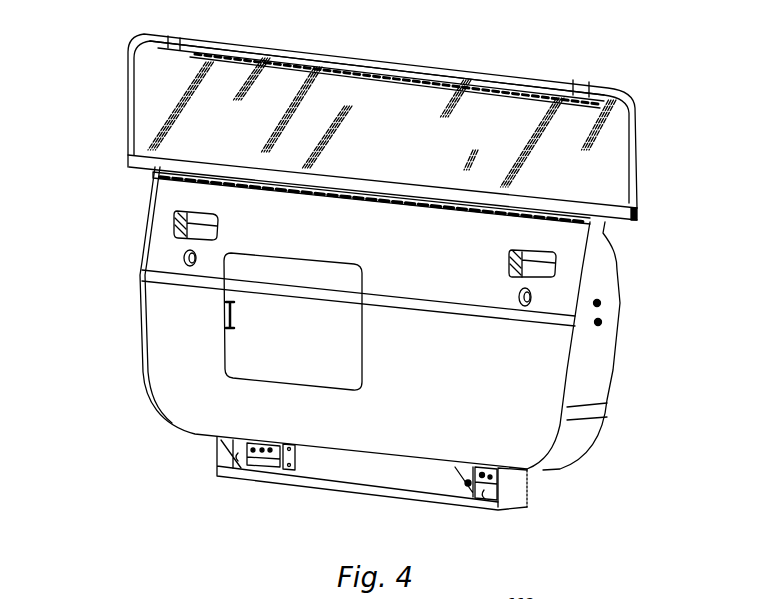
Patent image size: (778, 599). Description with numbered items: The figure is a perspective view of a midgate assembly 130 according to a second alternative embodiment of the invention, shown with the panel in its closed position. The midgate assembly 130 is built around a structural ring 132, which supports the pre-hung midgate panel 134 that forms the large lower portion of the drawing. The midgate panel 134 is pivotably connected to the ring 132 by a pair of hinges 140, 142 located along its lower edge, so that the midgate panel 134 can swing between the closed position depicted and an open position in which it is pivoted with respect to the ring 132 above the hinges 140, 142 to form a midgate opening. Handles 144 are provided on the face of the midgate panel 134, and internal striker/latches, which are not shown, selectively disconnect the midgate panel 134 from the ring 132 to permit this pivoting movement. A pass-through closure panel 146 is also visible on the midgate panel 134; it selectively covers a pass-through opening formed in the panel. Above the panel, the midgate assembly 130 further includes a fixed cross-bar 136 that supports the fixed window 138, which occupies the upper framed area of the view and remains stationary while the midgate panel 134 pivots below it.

The midgate assembly 130 is at (111, 57).
The structural ring 132 is at (420, 203).
The midgate panel 134 is at (547, 390).
The fixed cross-bar 136 is at (583, 208).
The fixed window 138 is at (405, 140).
The hinge 140 is at (217, 472).
The hinge 142 is at (453, 490).
The handle 144 is at (173, 238).
The pass-through closure panel 146 is at (252, 358).